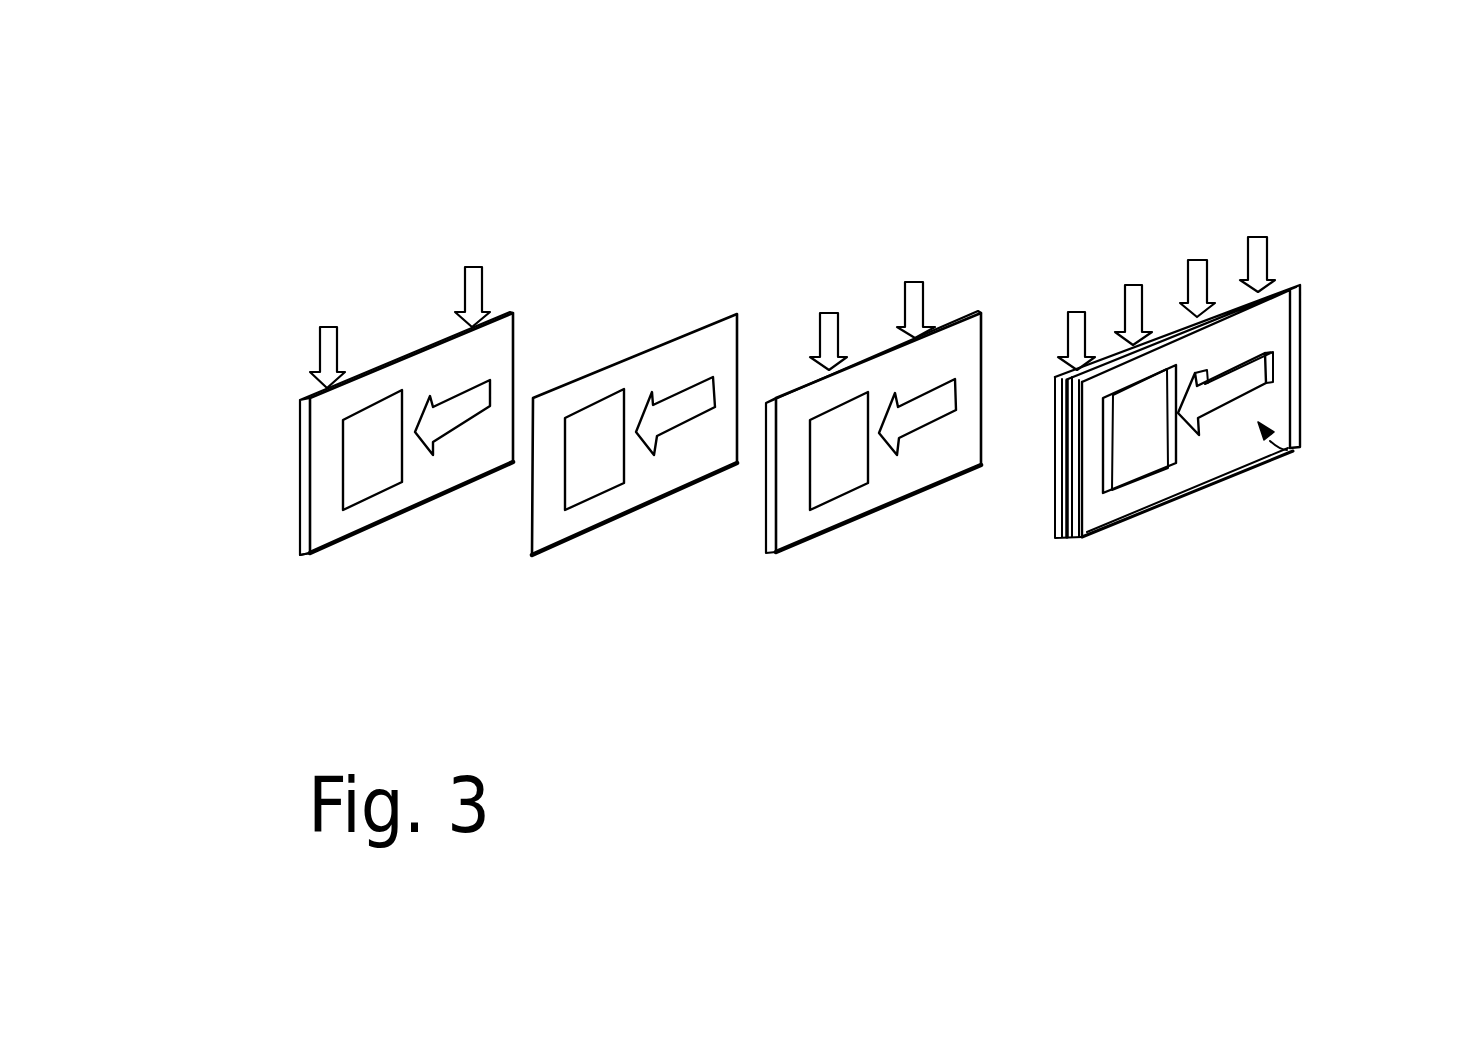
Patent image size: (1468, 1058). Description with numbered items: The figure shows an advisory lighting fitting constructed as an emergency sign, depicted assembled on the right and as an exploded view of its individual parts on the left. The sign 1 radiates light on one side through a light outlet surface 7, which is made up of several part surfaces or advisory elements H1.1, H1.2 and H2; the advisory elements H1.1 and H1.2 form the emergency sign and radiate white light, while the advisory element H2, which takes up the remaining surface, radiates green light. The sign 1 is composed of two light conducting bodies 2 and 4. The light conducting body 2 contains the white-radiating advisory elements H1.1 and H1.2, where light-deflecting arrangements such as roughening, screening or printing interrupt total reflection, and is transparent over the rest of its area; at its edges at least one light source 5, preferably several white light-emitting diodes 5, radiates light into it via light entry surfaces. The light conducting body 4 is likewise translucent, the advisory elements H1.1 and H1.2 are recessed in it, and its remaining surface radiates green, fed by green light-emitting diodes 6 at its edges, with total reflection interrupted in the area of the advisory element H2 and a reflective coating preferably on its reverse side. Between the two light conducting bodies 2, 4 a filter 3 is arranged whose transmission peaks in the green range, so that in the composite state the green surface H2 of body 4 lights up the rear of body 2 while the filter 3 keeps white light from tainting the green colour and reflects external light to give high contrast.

The sign 1 is at (1293, 513).
The light conducting body 2 is at (968, 528).
The filter 3 is at (712, 527).
The light conducting body 4 is at (330, 597).
The light source 5 is at (1195, 272).
The green light-emitting diodes 6 is at (1257, 250).
The light outlet surface 7 is at (1267, 437).
The advisory element H1.1 is at (828, 483).
The advisory element H1.2 is at (463, 403).
The advisory element H2 is at (337, 523).